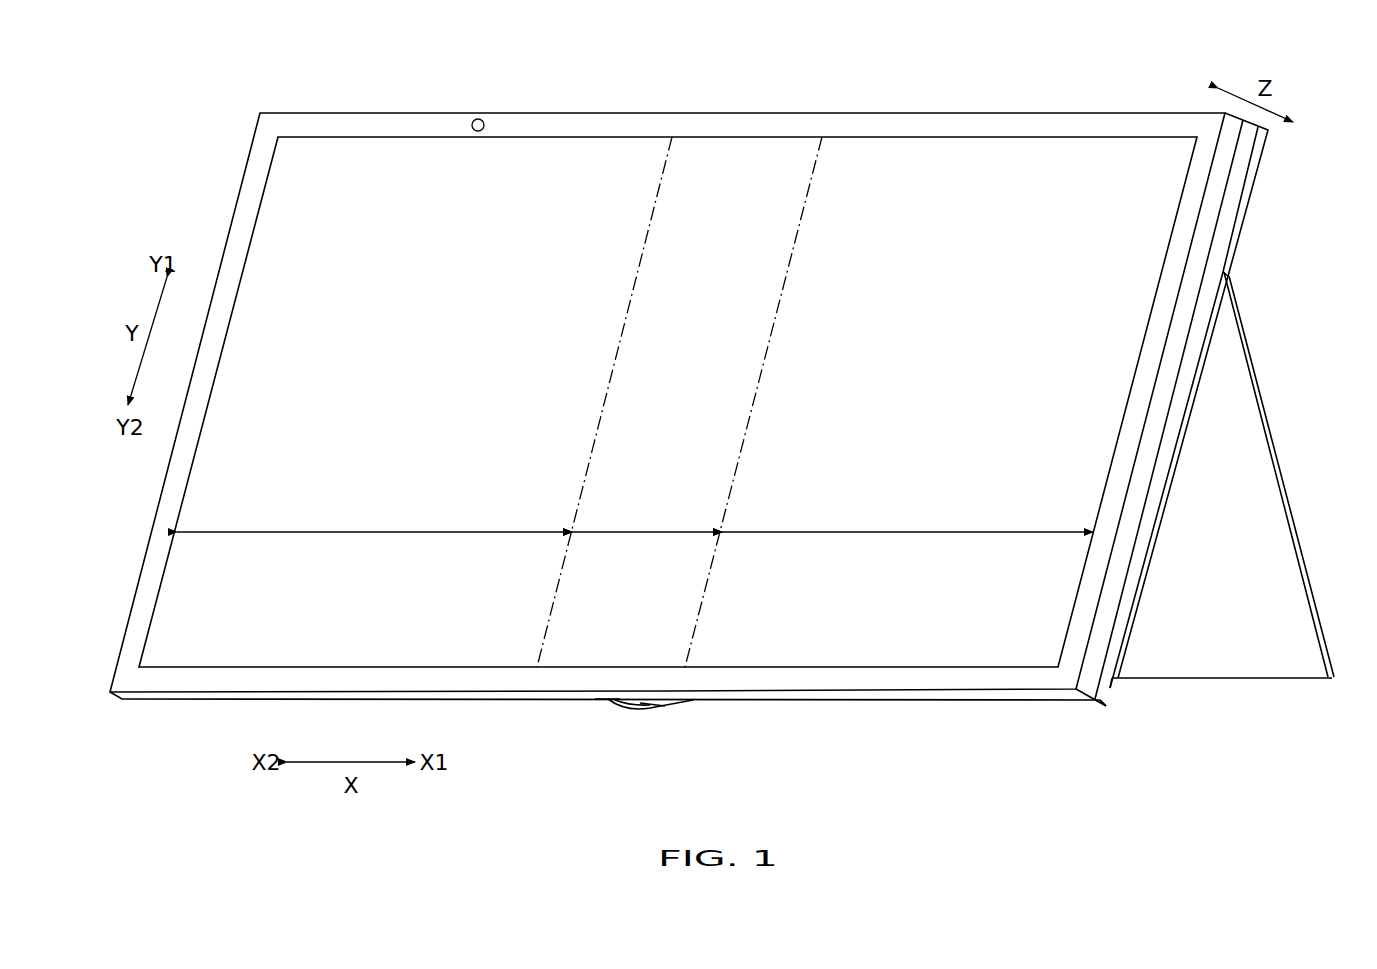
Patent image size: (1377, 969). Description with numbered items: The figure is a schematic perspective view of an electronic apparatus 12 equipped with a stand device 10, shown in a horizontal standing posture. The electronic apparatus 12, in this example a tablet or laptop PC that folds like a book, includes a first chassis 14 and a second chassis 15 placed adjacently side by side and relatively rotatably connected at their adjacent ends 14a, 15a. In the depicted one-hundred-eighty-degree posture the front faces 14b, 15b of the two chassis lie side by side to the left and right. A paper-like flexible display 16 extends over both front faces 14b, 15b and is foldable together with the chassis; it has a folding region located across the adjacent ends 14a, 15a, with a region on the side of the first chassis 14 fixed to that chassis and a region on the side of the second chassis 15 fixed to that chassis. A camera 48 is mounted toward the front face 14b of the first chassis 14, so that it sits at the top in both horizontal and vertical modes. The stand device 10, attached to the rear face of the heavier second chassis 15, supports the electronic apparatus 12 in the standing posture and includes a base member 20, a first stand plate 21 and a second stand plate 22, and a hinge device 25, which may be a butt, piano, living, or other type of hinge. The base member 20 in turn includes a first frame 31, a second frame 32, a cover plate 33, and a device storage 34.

The stand device 10 is at (1298, 458).
The electronic apparatus 12 is at (212, 60).
The first chassis 14 is at (438, 110).
The adjacent end of first chassis 14a is at (648, 705).
The front face of first chassis 14b is at (555, 160).
The second chassis 15 is at (1085, 110).
The adjacent end of second chassis 15a is at (610, 699).
The front face of second chassis 15b is at (937, 160).
The display 16 is at (745, 175).
The base member 20 is at (1131, 607).
The first stand plate 21 is at (1252, 192).
The second stand plate 22 is at (1316, 588).
The second hinge device 25 is at (1232, 272).
The first frame 31 is at (672, 706).
The second frame 32 is at (1112, 682).
The cover plate 33 is at (900, 706).
The device storage 34 is at (902, 770).
The camera 48 is at (478, 119).